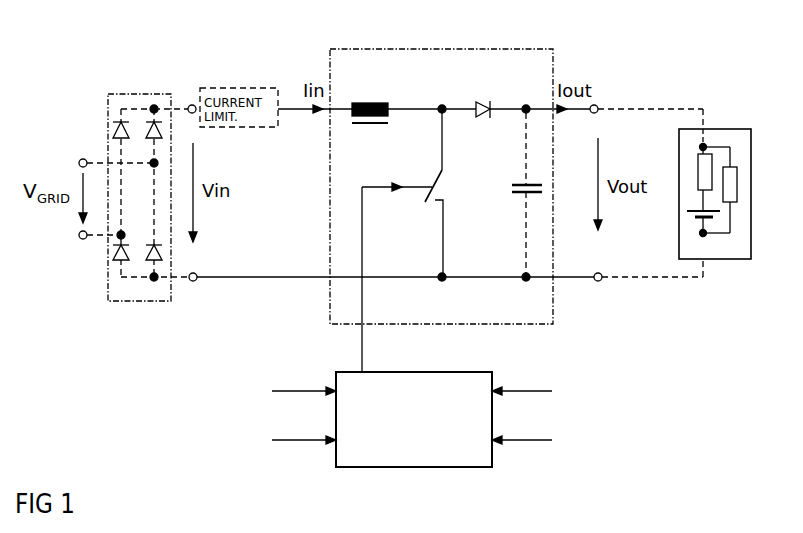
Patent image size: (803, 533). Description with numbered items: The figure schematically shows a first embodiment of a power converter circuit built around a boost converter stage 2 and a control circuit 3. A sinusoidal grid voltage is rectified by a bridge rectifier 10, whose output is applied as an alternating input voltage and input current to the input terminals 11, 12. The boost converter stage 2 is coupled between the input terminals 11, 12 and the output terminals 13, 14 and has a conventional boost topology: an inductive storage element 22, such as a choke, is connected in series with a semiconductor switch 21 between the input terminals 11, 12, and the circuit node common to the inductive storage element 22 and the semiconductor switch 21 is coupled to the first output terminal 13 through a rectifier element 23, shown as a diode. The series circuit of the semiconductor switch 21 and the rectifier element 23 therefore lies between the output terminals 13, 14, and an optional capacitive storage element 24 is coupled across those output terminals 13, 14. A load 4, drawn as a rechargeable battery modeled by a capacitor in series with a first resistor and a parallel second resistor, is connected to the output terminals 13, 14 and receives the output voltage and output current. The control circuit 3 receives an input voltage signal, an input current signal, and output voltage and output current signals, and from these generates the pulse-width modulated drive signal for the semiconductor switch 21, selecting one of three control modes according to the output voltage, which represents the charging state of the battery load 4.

The boost converter stage 2 is at (417, 47).
The control circuit 3 is at (422, 371).
The load 4 is at (752, 180).
The bridge rectifier 10 is at (132, 93).
The input terminal 11 is at (191, 100).
The input terminal 12 is at (192, 282).
The output terminal 13 is at (597, 96).
The output terminal 14 is at (598, 282).
The semiconductor switch 21 is at (445, 187).
The inductive storage element 22 is at (372, 100).
The rectifier element 23 is at (482, 102).
The capacitive storage element 24 is at (512, 180).